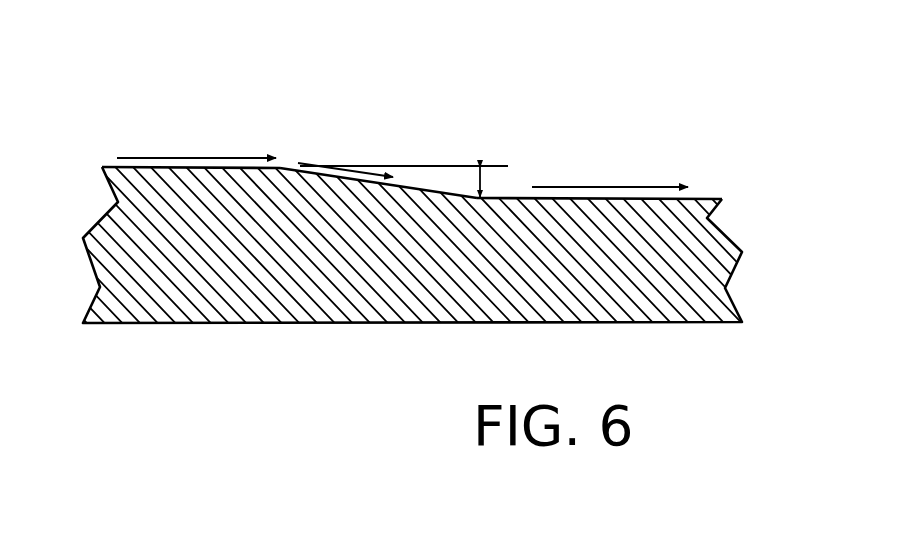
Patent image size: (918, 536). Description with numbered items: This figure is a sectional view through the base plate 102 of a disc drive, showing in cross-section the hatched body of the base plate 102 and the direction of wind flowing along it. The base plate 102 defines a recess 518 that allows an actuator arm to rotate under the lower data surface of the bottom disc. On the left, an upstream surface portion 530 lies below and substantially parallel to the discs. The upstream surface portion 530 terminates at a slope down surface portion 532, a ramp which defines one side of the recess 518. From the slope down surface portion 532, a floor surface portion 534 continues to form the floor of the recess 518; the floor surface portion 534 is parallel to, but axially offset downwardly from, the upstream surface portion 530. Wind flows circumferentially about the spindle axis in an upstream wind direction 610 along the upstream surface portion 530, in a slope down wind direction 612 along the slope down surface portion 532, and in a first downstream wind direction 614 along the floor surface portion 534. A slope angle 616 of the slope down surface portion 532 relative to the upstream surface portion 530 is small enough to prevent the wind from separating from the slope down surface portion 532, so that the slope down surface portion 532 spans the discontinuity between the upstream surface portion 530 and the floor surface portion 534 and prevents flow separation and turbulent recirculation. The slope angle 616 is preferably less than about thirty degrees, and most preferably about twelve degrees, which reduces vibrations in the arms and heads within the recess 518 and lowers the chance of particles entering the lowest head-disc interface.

The base plate 102 is at (318, 413).
The recess 518 is at (568, 107).
The upstream surface portion 530 is at (115, 167).
The slope down surface portion 532 is at (443, 195).
The floor surface portion 534 is at (707, 198).
The upstream wind direction 610 is at (160, 158).
The slope down wind direction 612 is at (362, 167).
The first downstream wind direction 614 is at (605, 188).
The slope angle 616 is at (483, 184).